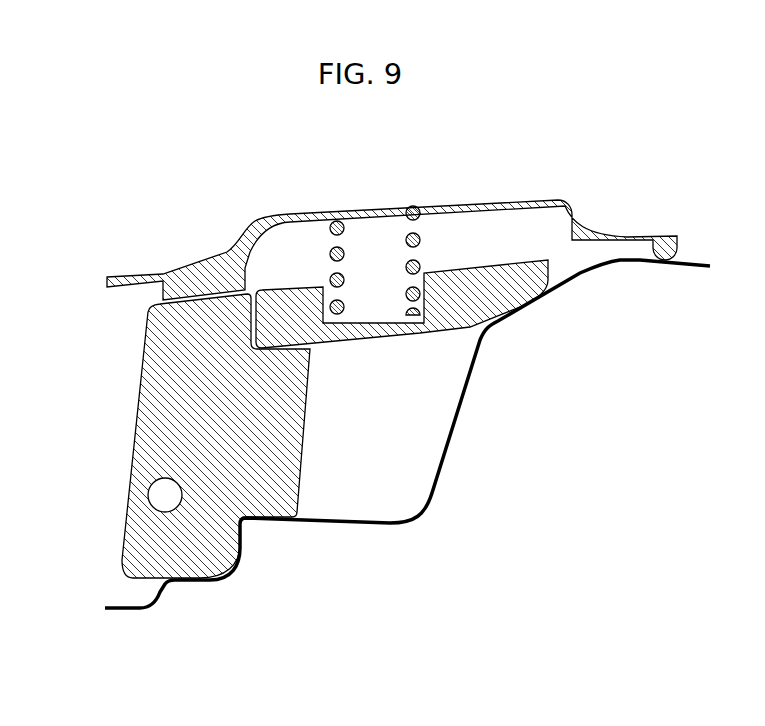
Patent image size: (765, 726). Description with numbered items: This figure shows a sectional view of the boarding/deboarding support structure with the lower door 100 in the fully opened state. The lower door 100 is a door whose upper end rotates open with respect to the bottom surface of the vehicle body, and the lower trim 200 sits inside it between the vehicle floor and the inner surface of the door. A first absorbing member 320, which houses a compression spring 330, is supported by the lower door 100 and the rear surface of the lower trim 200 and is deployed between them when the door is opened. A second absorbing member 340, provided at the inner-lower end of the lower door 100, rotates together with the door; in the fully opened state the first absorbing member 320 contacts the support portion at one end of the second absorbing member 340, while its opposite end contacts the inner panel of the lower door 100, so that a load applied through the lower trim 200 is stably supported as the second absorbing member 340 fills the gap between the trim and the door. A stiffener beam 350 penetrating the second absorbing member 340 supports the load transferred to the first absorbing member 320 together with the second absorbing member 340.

The lower door 100 is at (433, 495).
The lower trim 200 is at (133, 268).
The first absorbing member 320 is at (475, 283).
The compression spring 330 is at (417, 240).
The second absorbing member 340 is at (170, 405).
The stiffener beam 350 is at (162, 497).